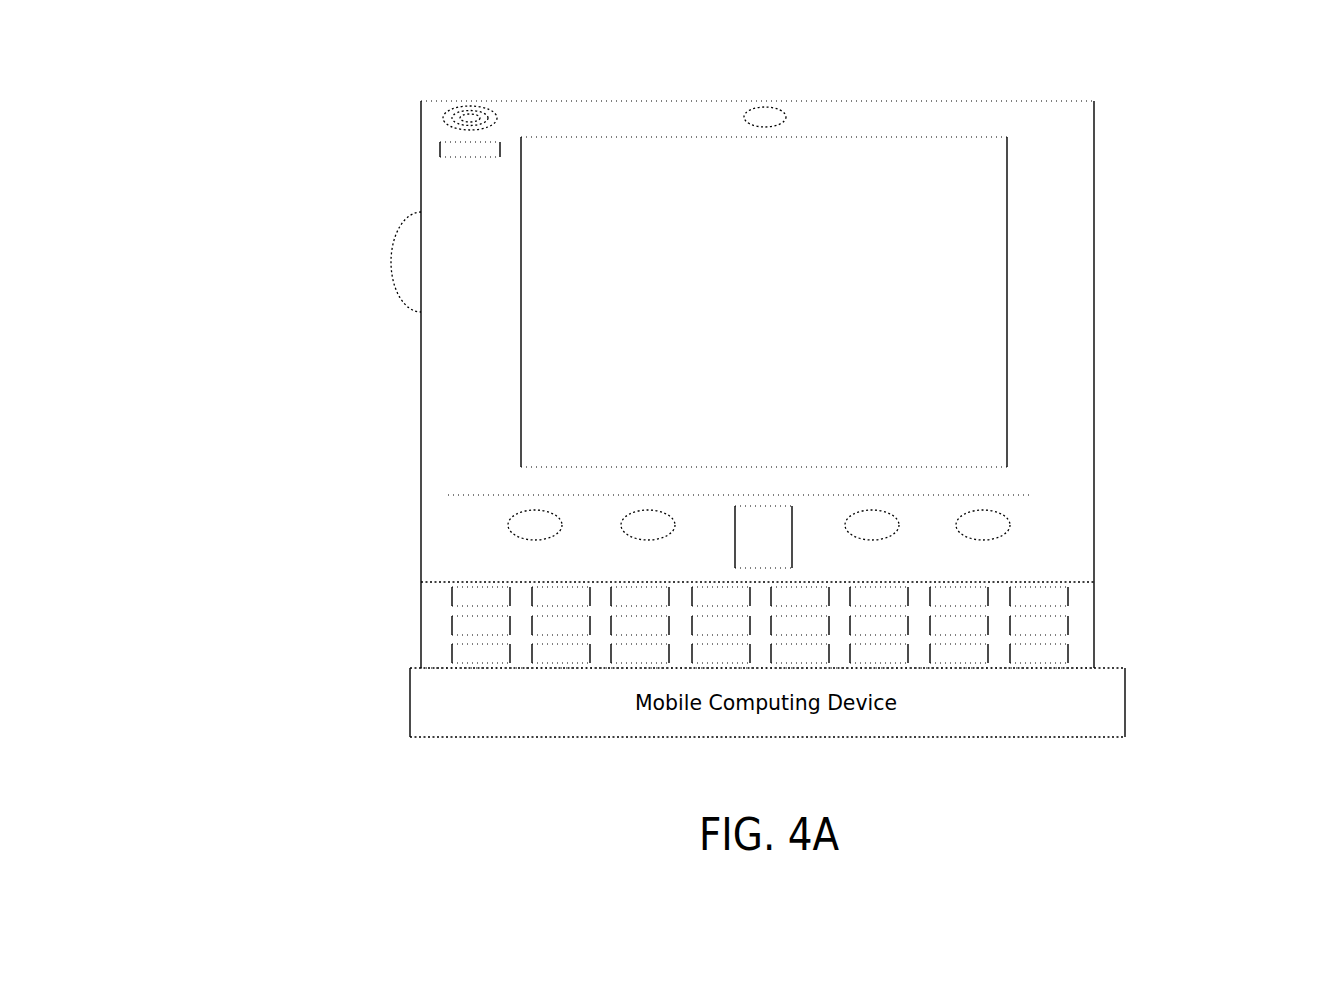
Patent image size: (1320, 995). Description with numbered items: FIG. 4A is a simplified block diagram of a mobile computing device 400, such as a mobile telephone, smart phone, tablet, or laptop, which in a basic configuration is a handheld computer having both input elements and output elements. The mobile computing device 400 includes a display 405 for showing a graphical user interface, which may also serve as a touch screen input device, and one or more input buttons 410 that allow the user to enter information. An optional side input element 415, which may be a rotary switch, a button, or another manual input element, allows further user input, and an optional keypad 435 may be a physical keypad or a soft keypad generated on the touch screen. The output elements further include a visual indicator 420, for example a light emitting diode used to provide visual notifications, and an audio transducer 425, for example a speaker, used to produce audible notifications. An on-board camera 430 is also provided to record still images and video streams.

The mobile computing device 400 is at (1080, 113).
The display 405 is at (670, 410).
The input buttons 410 is at (762, 542).
The side input element 415 is at (407, 261).
The visual indicator 420 is at (440, 156).
The audio transducer 425 is at (445, 119).
The on-board camera 430 is at (786, 117).
The keypad 435 is at (431, 657).